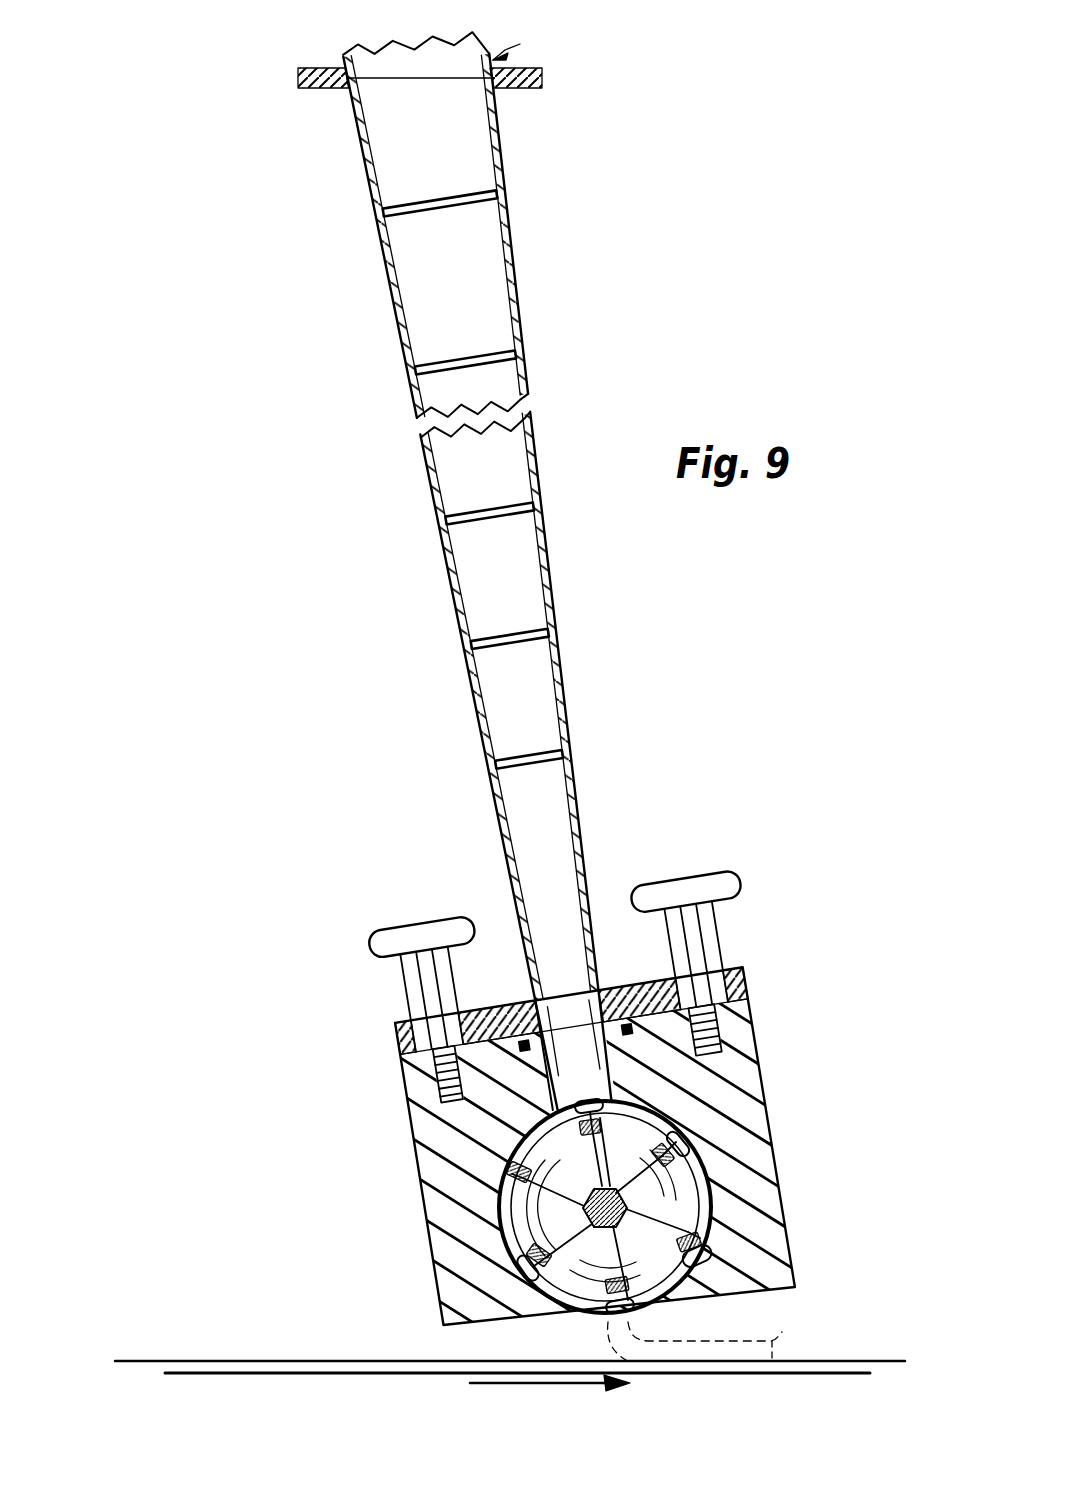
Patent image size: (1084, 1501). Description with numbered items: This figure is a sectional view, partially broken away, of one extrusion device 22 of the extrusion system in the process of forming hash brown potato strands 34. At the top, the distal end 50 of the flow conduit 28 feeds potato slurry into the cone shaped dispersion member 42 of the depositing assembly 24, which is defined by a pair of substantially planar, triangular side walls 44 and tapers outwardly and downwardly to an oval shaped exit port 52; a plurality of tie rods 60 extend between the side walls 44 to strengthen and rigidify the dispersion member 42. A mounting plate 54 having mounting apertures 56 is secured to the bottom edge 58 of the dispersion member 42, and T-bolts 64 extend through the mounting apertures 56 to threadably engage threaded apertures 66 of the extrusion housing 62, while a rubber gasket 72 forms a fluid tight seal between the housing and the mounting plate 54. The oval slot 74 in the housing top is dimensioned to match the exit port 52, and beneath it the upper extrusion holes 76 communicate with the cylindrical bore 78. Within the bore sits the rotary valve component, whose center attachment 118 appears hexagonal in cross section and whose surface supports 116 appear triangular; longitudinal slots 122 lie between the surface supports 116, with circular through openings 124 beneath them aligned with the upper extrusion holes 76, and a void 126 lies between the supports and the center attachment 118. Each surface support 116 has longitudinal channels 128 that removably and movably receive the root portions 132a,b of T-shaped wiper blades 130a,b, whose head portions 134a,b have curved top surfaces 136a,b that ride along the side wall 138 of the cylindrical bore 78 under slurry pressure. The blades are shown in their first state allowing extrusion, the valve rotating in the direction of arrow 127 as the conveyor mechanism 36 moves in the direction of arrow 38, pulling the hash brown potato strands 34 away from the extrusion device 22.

The extrusion device 22 is at (600, 356).
The depositing assembly 24 is at (514, 288).
The flow conduit 28 is at (451, 47).
The hash brown potato strands 34 is at (786, 1337).
The conveyor mechanism 36 is at (250, 1360).
The arrow 38 is at (588, 1392).
The dispersion member 42 is at (448, 581).
The side walls 44 is at (500, 138).
The distal end 50 is at (344, 66).
The exit port 52 is at (598, 990).
The mounting plate 54 is at (745, 978).
The mounting apertures 56 is at (714, 952).
The bottom edge 58 is at (532, 997).
The tie rods 60 is at (470, 205).
The extrusion housing 62 is at (772, 1100).
The T-bolts 64 is at (415, 928).
The threaded apertures 66 is at (730, 1072).
The rubber gasket 72 is at (472, 1020).
The oval slot 74 is at (570, 1045).
The upper extrusion holes 76 is at (512, 1132).
The cylindrical bore 78 is at (500, 1195).
The surface supports 116 is at (770, 1146).
The center attachment 118 is at (645, 1192).
The longitudinal slots 122 is at (545, 1220).
The through openings 124 is at (535, 1250).
The void 126 is at (706, 1152).
The arrow 127 is at (556, 1322).
The longitudinal channels 128 is at (518, 1193).
The wiper blades 130a,b is at (712, 1226).
The root portions 132a,b is at (716, 1250).
The head portions 134a,b is at (522, 1276).
The curved top surfaces 136a,b is at (556, 1295).
The side wall 138 is at (692, 1174).